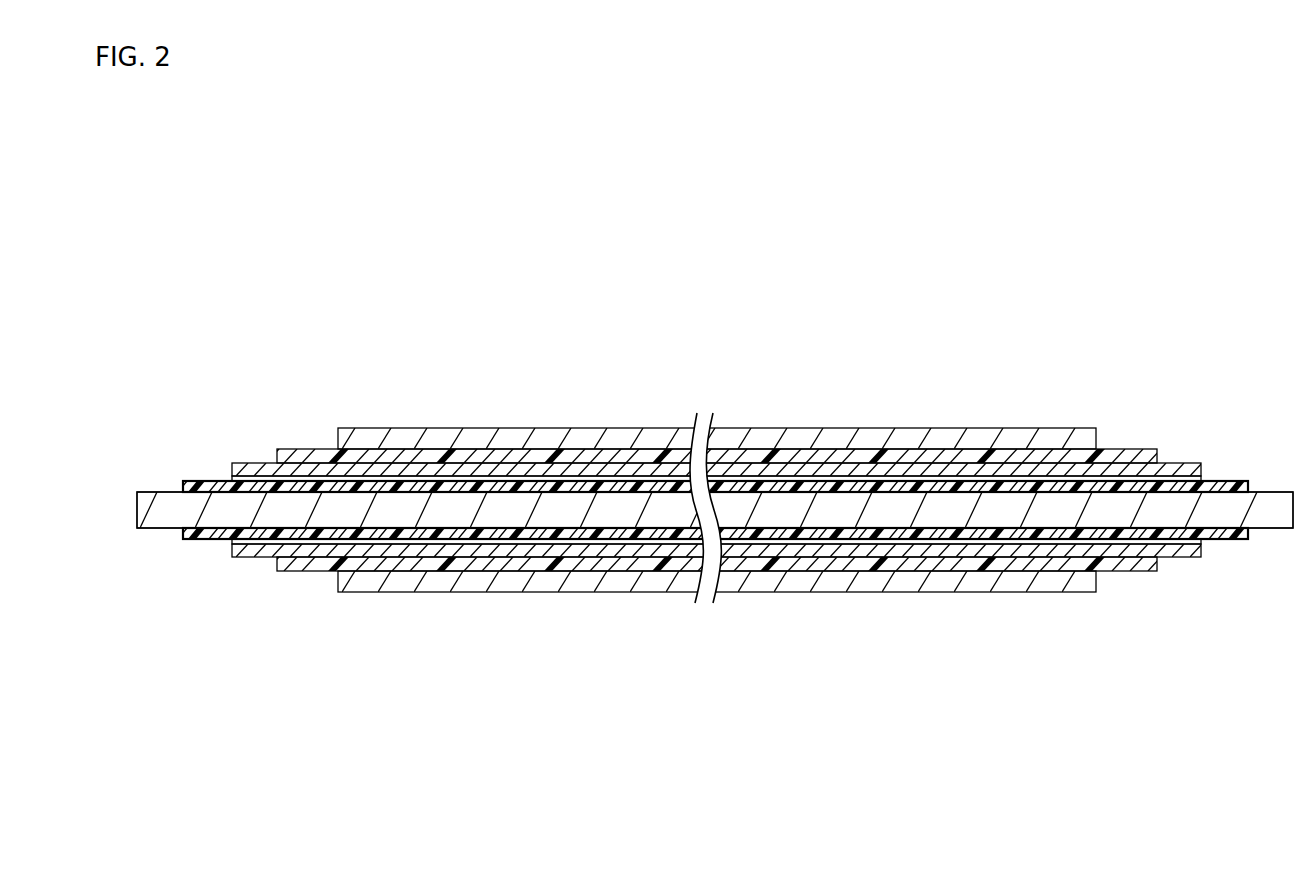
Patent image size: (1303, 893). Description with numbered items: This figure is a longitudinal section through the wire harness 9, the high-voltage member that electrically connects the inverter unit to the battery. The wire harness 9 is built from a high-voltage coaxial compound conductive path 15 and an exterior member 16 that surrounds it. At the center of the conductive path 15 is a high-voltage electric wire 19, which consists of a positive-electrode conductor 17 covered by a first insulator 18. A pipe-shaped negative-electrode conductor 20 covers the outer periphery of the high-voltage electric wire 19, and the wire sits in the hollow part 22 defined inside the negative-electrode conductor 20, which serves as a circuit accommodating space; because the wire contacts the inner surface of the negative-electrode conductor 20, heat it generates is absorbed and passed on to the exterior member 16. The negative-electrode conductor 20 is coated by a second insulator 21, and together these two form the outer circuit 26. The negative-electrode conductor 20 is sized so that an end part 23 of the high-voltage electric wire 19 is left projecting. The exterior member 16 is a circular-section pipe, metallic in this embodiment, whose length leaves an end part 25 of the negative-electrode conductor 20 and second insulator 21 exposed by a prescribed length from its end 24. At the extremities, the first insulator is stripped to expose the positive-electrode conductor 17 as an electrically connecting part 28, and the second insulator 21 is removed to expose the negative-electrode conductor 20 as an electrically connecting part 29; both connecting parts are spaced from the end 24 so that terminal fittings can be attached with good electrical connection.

The wire harness 9 is at (838, 290).
The high-voltage coaxial compound conductive path 15 is at (1209, 448).
The exterior member 16 is at (883, 429).
The positive-electrode conductor 17 is at (142, 528).
The first insulator 18 is at (208, 539).
The high-voltage electric wire 19 is at (135, 612).
The negative-electrode conductor 20 is at (247, 463).
The second insulator 21 is at (300, 449).
The hollow part 22 is at (510, 478).
The end part of the high-voltage electric wire 23 is at (203, 482).
The end of the exterior member 24 is at (337, 440).
The end part of the negative-electrode conductor and second insulator 25 is at (310, 571).
The outer circuit 26 is at (225, 334).
The electrically connecting part 28 is at (153, 490).
The electrically connecting part 29 is at (257, 557).